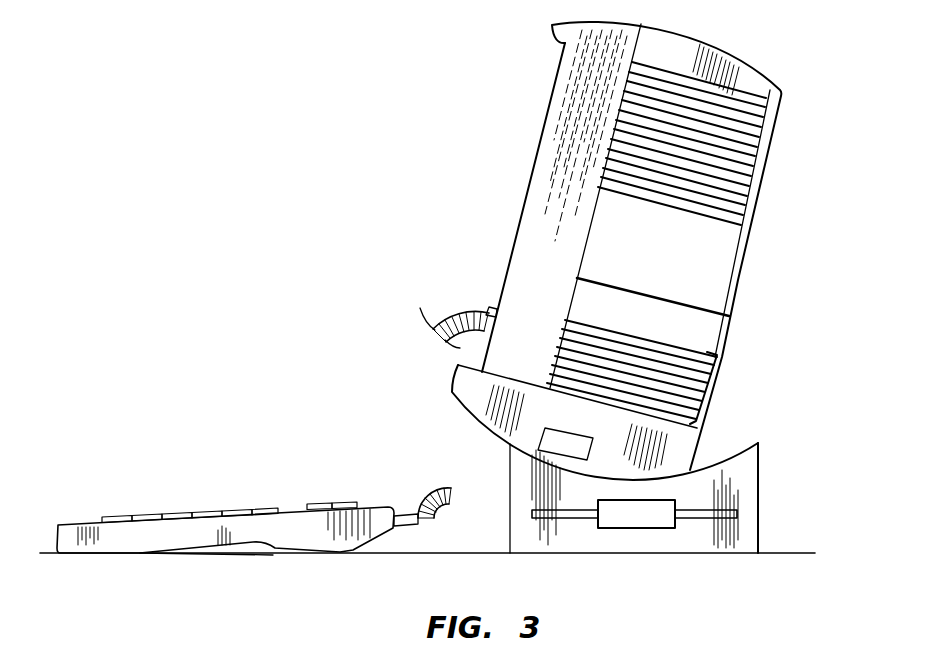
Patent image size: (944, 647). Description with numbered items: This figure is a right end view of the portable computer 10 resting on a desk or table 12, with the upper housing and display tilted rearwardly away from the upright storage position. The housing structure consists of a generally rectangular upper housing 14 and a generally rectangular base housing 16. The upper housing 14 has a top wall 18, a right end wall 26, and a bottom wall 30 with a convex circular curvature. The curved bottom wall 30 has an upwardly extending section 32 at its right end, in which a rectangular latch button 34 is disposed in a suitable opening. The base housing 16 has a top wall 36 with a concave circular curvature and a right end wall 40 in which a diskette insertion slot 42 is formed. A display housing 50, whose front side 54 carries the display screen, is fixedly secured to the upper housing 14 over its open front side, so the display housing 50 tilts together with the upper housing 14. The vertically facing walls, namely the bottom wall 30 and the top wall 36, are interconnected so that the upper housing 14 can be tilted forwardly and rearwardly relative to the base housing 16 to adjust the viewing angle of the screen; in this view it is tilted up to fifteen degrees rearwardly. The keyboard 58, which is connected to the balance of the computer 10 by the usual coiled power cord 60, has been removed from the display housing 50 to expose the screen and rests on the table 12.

The portable computer 10 is at (327, 170).
The desk or table 12 is at (800, 552).
The upper housing 14 is at (653, 242).
The base housing 16 is at (668, 496).
The top wall 18 is at (757, 65).
The right end wall 26 is at (698, 281).
The bottom wall 30 is at (575, 422).
The upwardly extending section 32 is at (468, 397).
The latch button 34 is at (580, 450).
The top wall 36 is at (741, 457).
The right end wall 40 is at (687, 538).
The diskette insertion slot 42 is at (637, 518).
The display housing 50 is at (640, 20).
The front side 54 is at (540, 135).
The keyboard 58 is at (80, 523).
The coiled power cord 60 is at (457, 305).